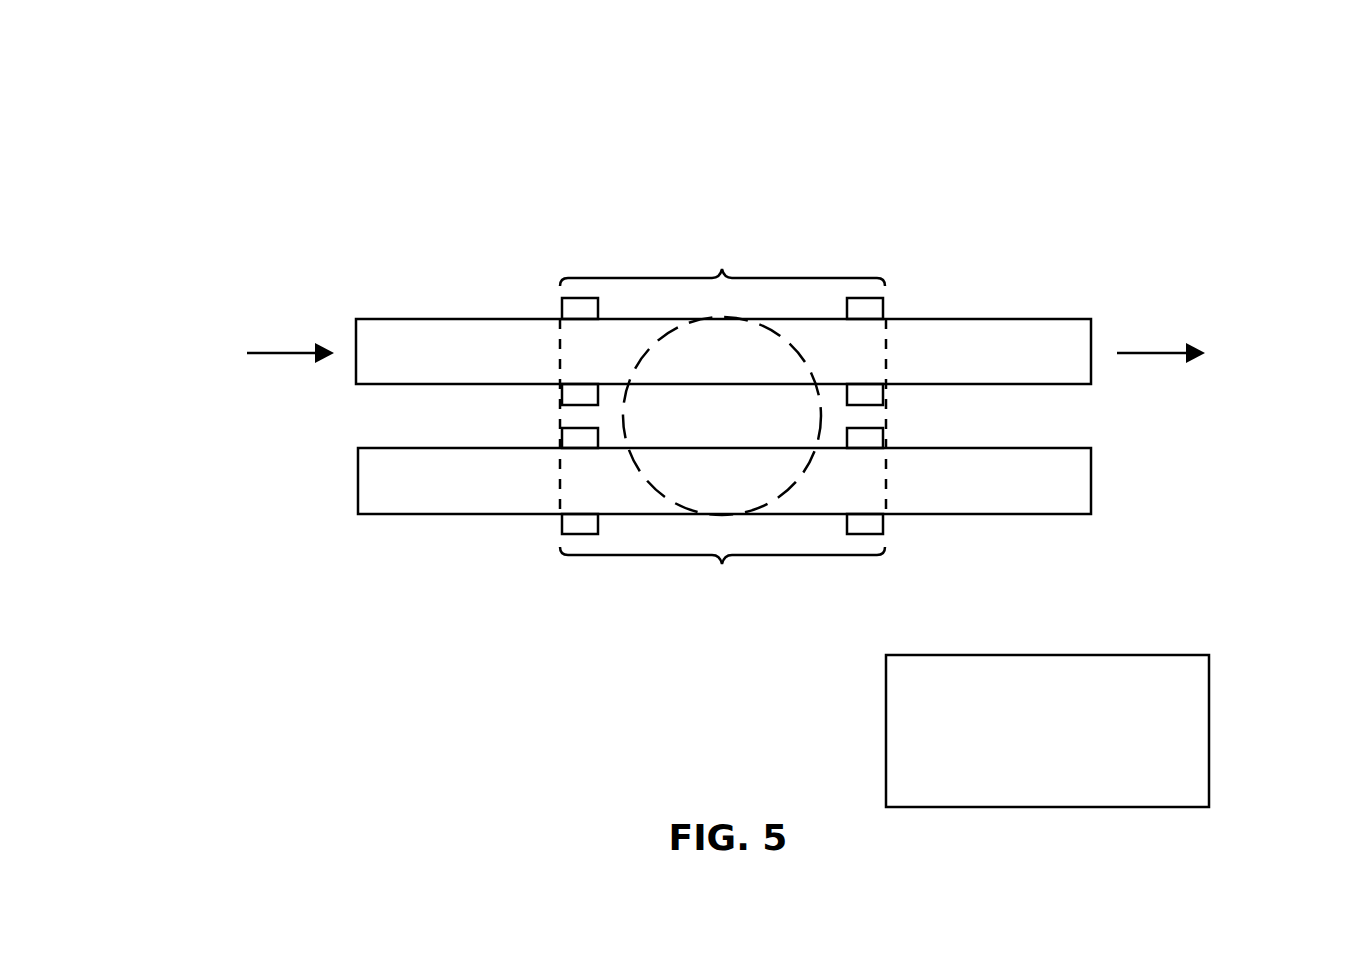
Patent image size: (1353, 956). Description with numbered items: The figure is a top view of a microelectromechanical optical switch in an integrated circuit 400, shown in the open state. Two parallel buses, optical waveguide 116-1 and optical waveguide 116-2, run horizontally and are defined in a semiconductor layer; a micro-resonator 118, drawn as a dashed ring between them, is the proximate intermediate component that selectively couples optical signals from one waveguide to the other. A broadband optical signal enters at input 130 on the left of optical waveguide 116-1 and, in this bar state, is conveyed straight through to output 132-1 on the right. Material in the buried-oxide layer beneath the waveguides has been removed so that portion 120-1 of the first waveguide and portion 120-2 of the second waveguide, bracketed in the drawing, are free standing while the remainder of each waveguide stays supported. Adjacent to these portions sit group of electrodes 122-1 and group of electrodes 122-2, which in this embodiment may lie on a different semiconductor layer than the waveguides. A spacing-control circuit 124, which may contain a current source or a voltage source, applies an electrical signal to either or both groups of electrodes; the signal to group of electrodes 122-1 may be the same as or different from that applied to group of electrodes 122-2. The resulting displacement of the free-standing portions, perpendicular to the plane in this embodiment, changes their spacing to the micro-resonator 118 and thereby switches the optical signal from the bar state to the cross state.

The integrated circuit 400 is at (295, 142).
The optical waveguide 116-1 is at (1008, 342).
The optical waveguide 116-2 is at (1058, 480).
The micro-resonator 118 is at (712, 422).
The input 130 is at (293, 350).
The output 132-1 is at (1162, 351).
The portion 120-1 is at (723, 358).
The portion 120-2 is at (722, 587).
The group of electrodes 122-1 is at (870, 395).
The group of electrodes 122-2 is at (870, 525).
The spacing-control circuit 124 is at (1047, 731).